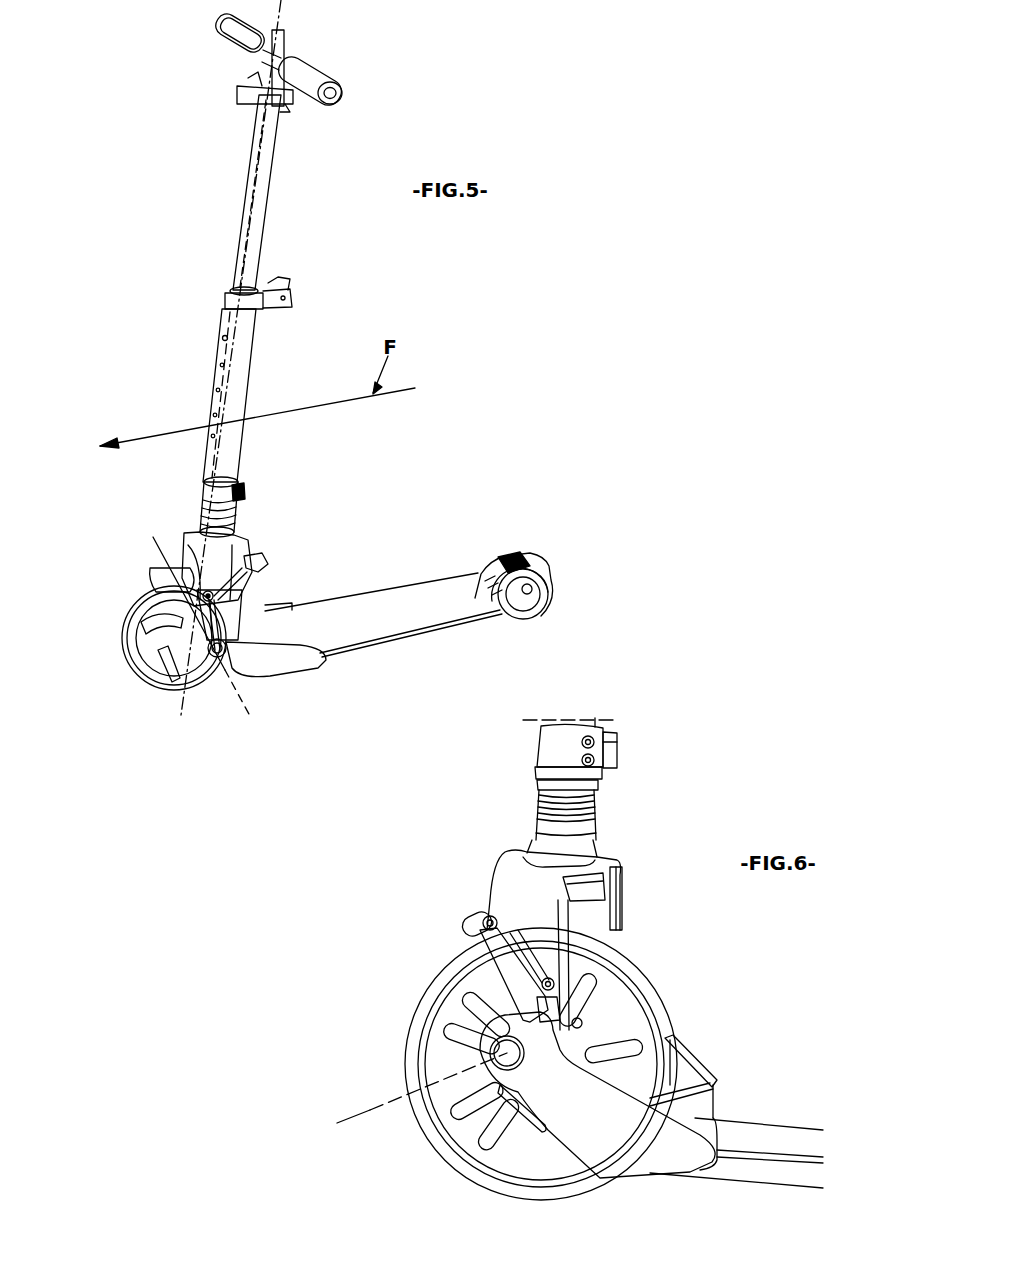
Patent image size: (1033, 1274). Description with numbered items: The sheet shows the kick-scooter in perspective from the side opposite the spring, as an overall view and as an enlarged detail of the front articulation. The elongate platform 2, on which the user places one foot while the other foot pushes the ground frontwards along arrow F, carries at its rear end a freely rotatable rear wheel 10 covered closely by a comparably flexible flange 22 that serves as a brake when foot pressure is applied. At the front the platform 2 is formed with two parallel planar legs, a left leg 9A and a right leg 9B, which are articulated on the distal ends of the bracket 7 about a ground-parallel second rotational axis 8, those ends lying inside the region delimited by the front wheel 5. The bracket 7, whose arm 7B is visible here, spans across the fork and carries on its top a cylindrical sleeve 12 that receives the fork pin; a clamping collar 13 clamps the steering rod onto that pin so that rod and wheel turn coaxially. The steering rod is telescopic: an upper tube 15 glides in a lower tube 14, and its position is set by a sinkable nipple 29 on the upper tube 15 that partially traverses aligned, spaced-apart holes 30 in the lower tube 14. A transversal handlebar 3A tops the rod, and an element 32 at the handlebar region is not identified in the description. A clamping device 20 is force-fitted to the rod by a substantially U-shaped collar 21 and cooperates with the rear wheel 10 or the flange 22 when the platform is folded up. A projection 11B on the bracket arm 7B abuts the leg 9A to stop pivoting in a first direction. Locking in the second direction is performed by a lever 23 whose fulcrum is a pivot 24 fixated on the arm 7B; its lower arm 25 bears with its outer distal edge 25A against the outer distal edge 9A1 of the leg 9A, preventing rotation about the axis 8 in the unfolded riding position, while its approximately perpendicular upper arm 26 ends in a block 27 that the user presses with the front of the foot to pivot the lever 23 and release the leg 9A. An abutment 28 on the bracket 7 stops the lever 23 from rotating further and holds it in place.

In FIG. 5, the platform 2 is at (386, 588).
In FIG. 6, the platform 2 is at (803, 1118).
In FIG. 5, the transversal handlebar 3A is at (303, 70).
In FIG. 5, the front wheel 5 is at (158, 685).
In FIG. 6, the front wheel 5 is at (410, 1030).
In FIG. 5, the bracket 7 is at (179, 526).
In FIG. 6, the bracket 7 is at (496, 842).
In FIG. 5, the arm of the bracket 7B is at (220, 568).
In FIG. 6, the arm of the bracket 7B is at (503, 997).
In FIG. 5, the second rotational axis 8 is at (250, 726).
In FIG. 6, the second rotational axis 8 is at (371, 1128).
In FIG. 5, the left leg 9A is at (272, 664).
In FIG. 6, the left leg 9A is at (587, 1110).
In FIG. 6, the outer distal edge of the left leg 9A1 is at (560, 1014).
In FIG. 6, the right leg 9B is at (707, 1050).
In FIG. 5, the rear wheel 10 is at (546, 580).
In FIG. 6, the projection 11B is at (518, 1130).
In FIG. 5, the cylindrical sleeve 12 is at (219, 535).
In FIG. 6, the cylindrical sleeve 12 is at (584, 811).
In FIG. 5, the clamping collar 13 is at (242, 486).
In FIG. 6, the clamping collar 13 is at (617, 748).
In FIG. 5, the lower tube 14 is at (242, 373).
In FIG. 6, the lower tube 14 is at (574, 723).
In FIG. 5, the upper tube 15 is at (265, 192).
In FIG. 5, the clamping device 20 is at (285, 298).
In FIG. 5, the collar 21 is at (229, 289).
In FIG. 5, the flange 22 is at (534, 558).
In FIG. 6, the lever 23 is at (556, 895).
In FIG. 5, the pivot 24 is at (177, 601).
In FIG. 6, the pivot 24 is at (484, 918).
In FIG. 5, the lower arm of the lever 25 is at (210, 605).
In FIG. 6, the lower arm of the lever 25 is at (518, 970).
In FIG. 6, the outer distal edge of the lower arm 25A is at (553, 983).
In FIG. 5, the upper arm of the lever 26 is at (229, 582).
In FIG. 6, the upper arm of the lever 26 is at (515, 901).
In FIG. 5, the block 27 is at (264, 562).
In FIG. 6, the block 27 is at (590, 883).
In FIG. 6, the abutment 28 is at (620, 905).
In FIG. 5, the sinkable nipple 29 is at (222, 337).
In FIG. 5, the holes 30 is at (220, 364).
In FIG. 5, the handlebar stem 32 is at (283, 38).